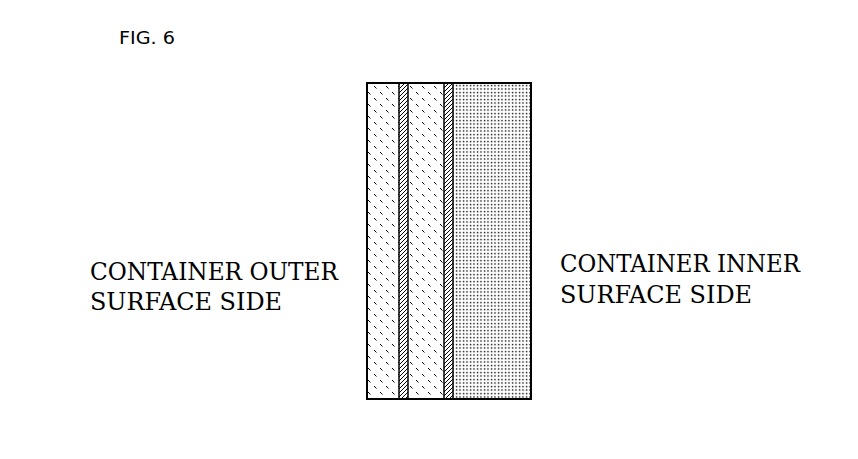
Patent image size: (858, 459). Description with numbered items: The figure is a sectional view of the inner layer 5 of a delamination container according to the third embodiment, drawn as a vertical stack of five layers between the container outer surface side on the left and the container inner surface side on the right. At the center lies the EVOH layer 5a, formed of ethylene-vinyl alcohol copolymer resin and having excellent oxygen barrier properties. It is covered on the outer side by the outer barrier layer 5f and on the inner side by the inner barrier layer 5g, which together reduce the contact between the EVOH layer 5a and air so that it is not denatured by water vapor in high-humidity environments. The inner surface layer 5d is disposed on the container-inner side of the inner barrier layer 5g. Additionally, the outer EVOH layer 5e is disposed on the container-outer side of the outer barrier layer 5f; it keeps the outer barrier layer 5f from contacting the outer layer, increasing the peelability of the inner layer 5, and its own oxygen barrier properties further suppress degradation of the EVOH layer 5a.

The inner layer 5 is at (582, 73).
The EVOH layer 5a is at (425, 93).
The inner surface layer 5d is at (497, 97).
The outer EVOH layer 5e is at (370, 166).
The outer barrier layer 5f is at (404, 90).
The inner barrier layer 5g is at (447, 90).